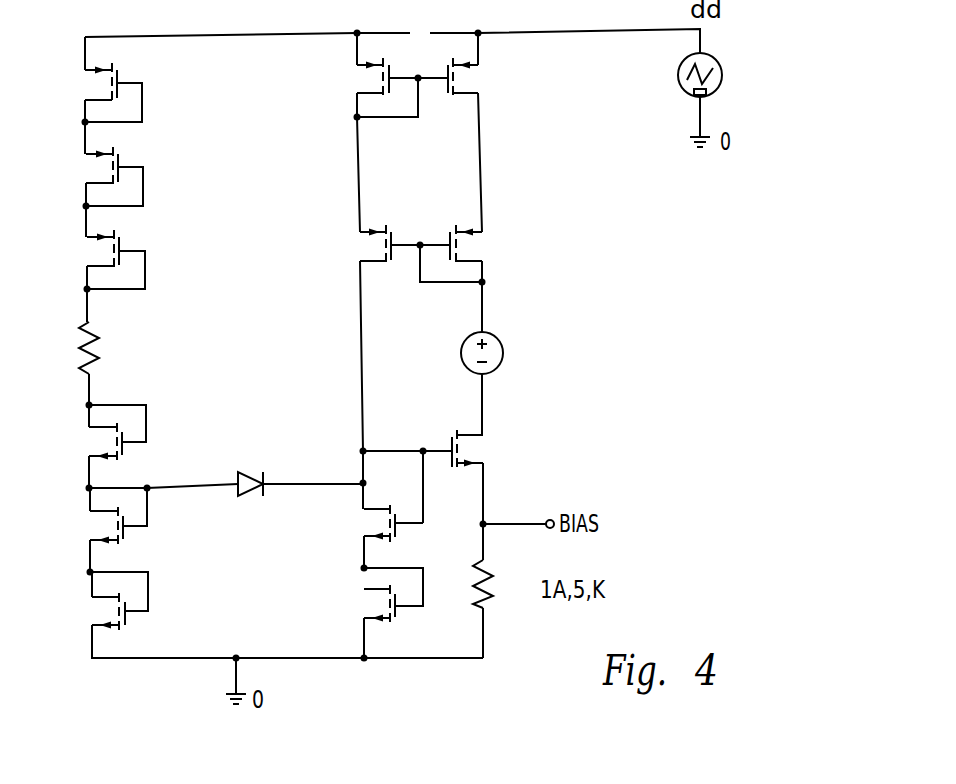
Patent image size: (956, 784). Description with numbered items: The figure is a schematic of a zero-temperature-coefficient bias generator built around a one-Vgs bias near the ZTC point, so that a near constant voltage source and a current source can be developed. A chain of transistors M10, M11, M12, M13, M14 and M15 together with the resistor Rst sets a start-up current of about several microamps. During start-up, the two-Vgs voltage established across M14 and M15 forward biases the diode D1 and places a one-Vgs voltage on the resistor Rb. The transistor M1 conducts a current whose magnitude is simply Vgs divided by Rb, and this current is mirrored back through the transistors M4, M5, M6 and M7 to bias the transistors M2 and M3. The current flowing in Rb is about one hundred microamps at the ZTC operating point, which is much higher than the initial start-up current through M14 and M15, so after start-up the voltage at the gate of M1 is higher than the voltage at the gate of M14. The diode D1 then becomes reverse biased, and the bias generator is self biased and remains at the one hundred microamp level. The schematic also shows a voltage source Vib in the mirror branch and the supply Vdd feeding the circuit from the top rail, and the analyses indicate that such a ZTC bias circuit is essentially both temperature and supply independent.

The transistor M1 is at (438, 476).
The transistor M2 is at (378, 525).
The transistor M3 is at (378, 596).
The transistor M4 is at (481, 246).
The transistor M5 is at (404, 253).
The transistor M6 is at (479, 79).
The transistor M7 is at (387, 87).
The transistor M10 is at (93, 92).
The transistor M11 is at (95, 176).
The transistor M12 is at (96, 259).
The transistor M13 is at (96, 434).
The transistor M14 is at (97, 517).
The transistor M15 is at (99, 602).
The diode D1 is at (255, 469).
The resistor Rst is at (83, 348).
The resistor Rb is at (501, 584).
The bias voltage source Vib is at (465, 353).
The supply voltage source Vdd is at (681, 100).